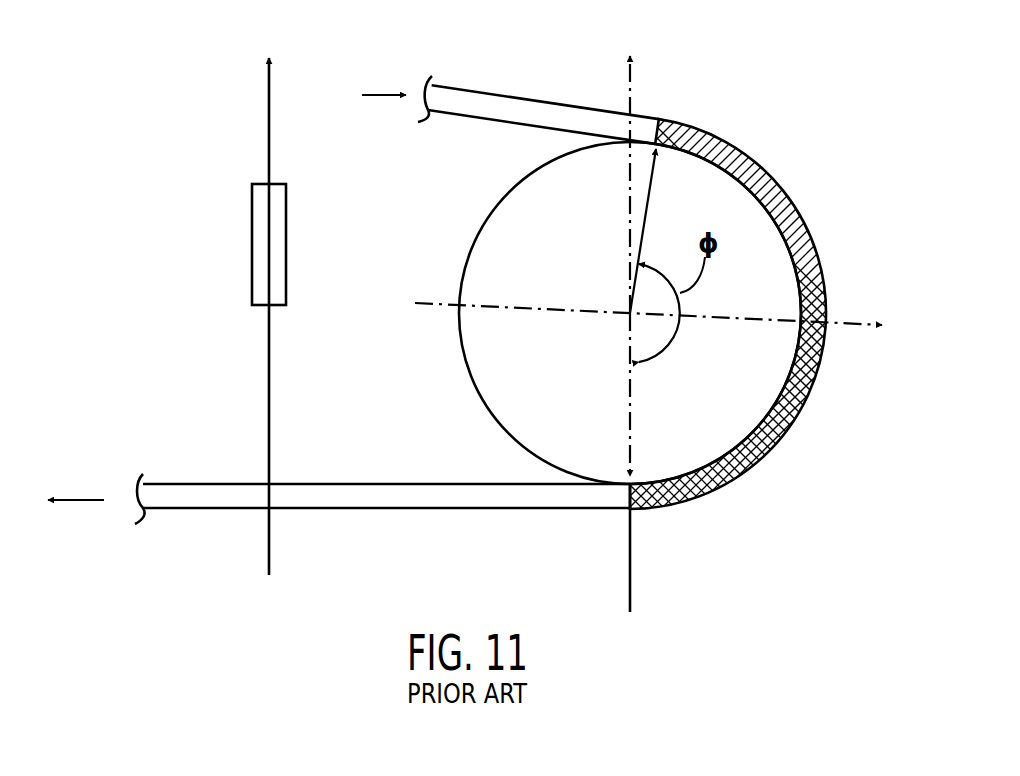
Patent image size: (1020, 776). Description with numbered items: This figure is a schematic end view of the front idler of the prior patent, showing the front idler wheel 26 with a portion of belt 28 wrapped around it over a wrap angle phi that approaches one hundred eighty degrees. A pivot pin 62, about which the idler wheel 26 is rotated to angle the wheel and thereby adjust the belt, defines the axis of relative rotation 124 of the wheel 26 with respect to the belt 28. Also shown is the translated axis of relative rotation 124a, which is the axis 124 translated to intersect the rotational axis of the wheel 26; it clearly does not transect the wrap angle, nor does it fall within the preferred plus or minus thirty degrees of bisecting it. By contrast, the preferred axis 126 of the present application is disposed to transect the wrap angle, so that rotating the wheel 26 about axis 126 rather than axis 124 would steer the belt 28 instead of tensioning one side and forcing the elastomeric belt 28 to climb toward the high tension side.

The front idler wheel 26 is at (527, 178).
The belt 28 is at (543, 101).
The pivot pin 62 is at (250, 245).
The axis of relative rotation 124 is at (266, 122).
The translated axis of relative rotation 124a is at (633, 92).
The preferred axis 126 is at (848, 323).